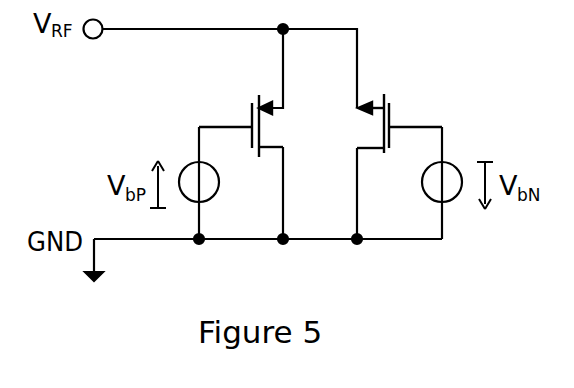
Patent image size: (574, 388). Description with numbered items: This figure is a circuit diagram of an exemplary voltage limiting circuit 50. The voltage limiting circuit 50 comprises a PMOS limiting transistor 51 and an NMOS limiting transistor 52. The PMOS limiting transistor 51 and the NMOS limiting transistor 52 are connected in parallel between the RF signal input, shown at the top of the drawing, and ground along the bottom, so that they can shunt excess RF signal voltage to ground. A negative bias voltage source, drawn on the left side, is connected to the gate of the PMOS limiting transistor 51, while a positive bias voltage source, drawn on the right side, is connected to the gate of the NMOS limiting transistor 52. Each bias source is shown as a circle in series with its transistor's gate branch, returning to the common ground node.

The voltage limiting circuit 50 is at (431, 72).
The PMOS limiting transistor 51 is at (252, 108).
The NMOS limiting transistor 52 is at (389, 114).